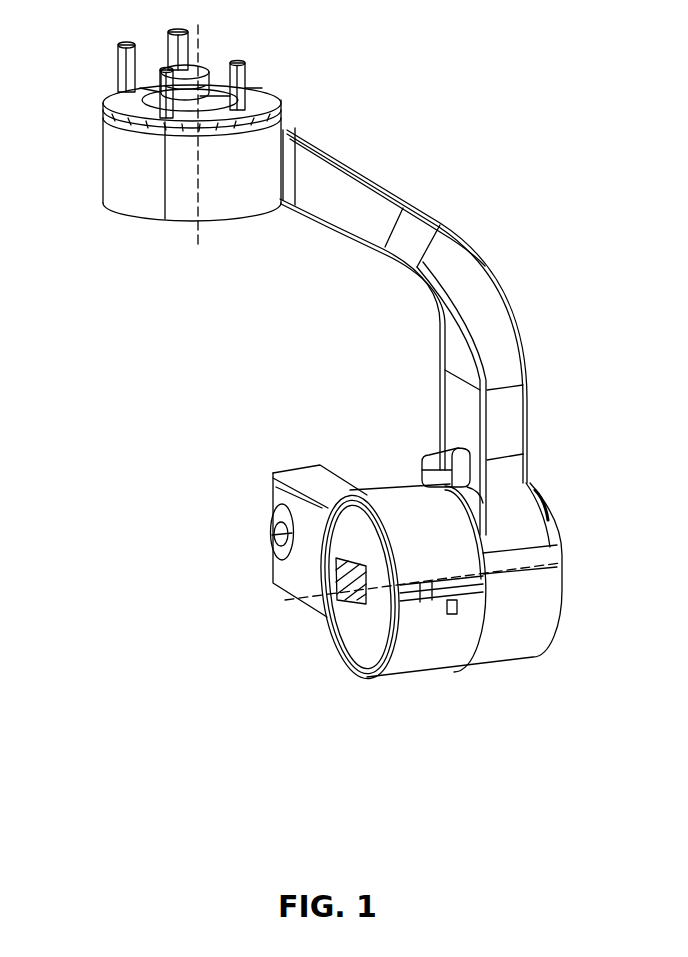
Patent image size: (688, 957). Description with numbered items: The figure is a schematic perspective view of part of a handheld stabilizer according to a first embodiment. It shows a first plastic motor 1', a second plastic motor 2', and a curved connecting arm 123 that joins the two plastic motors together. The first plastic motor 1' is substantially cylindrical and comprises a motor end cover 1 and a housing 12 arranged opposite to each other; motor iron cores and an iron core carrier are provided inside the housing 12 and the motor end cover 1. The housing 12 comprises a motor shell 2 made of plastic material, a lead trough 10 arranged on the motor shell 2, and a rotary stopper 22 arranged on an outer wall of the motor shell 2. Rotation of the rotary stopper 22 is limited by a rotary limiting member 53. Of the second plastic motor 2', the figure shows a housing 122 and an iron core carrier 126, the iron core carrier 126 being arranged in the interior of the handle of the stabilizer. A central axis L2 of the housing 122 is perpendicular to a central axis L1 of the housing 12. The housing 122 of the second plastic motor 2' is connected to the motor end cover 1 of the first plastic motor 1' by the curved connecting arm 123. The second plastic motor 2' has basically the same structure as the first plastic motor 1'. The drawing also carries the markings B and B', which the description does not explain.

The second plastic motor 2' is at (220, 157).
The housing 122 is at (145, 180).
The iron core carrier 126 is at (105, 97).
The central axis L2 is at (196, 149).
The connecting arm 123 is at (461, 263).
The first plastic motor 1' is at (404, 546).
The motor end cover 1 is at (478, 580).
The motor shell 2 is at (441, 605).
The rotary stopper 22 is at (458, 660).
The fastener B' is at (434, 628).
The housing 12 is at (362, 675).
The lead trough 10 is at (322, 573).
The fastener hole B is at (258, 530).
The central axis L1 is at (407, 593).
The rotary limiting member 53 is at (442, 458).